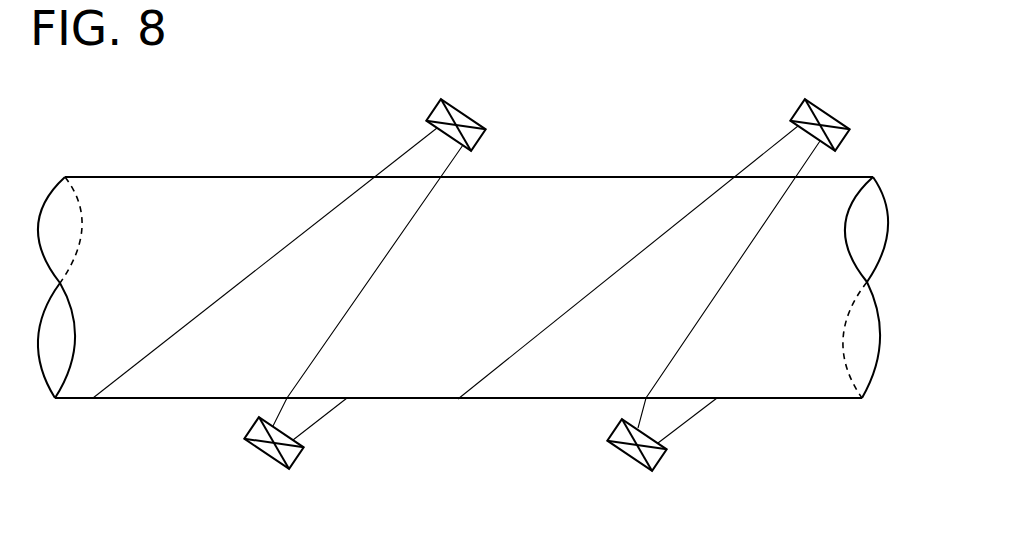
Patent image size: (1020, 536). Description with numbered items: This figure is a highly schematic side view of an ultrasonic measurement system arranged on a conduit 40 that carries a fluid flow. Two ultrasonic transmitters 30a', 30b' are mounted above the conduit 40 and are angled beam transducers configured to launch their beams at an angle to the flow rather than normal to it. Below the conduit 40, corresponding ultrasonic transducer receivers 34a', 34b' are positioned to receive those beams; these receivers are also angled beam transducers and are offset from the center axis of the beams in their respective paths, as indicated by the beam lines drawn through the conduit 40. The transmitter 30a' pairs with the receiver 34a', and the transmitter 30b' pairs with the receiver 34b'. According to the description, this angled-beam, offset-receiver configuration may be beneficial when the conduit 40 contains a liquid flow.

The conduit 40 is at (132, 178).
The ultrasonic transmitter 30a' is at (444, 103).
The ultrasonic transmitter 30b' is at (780, 114).
The ultrasonic transducer receiver 34a' is at (333, 462).
The ultrasonic transducer receiver 34b' is at (710, 457).